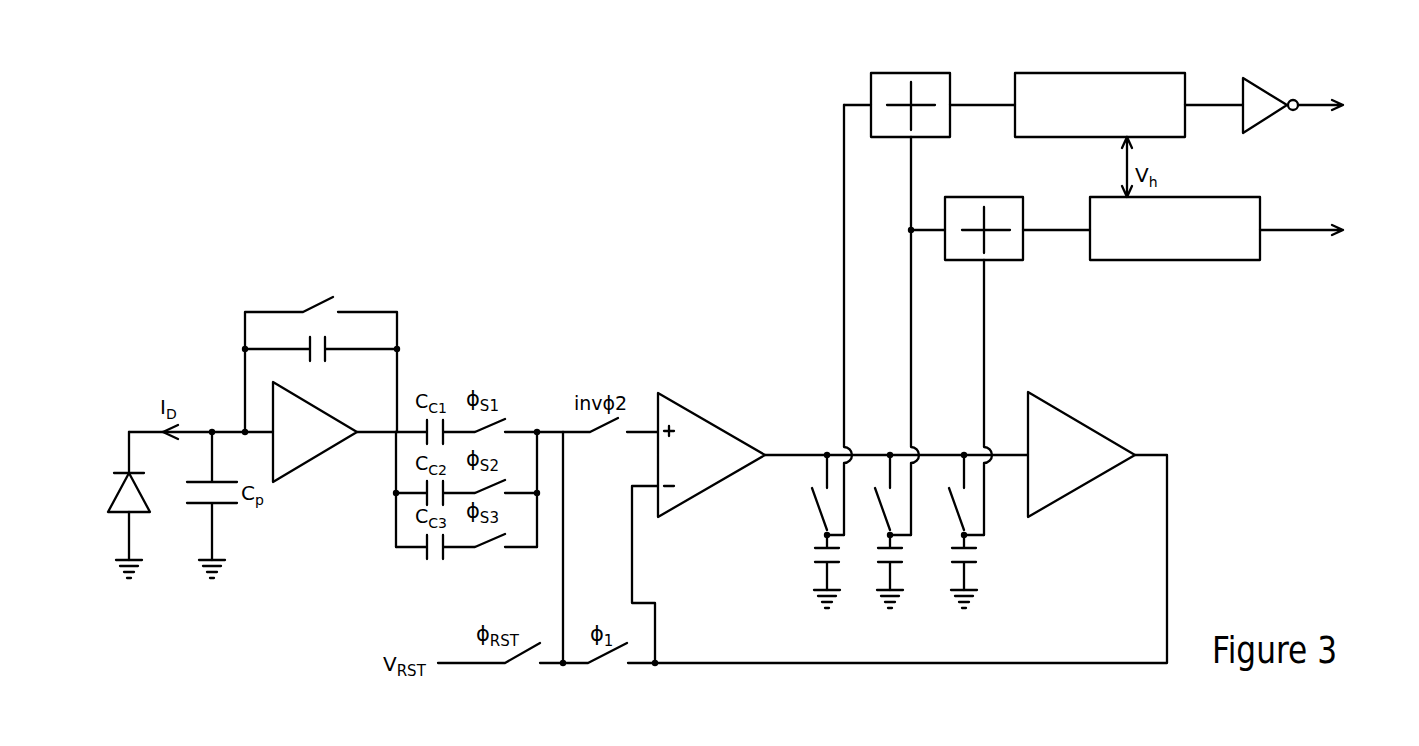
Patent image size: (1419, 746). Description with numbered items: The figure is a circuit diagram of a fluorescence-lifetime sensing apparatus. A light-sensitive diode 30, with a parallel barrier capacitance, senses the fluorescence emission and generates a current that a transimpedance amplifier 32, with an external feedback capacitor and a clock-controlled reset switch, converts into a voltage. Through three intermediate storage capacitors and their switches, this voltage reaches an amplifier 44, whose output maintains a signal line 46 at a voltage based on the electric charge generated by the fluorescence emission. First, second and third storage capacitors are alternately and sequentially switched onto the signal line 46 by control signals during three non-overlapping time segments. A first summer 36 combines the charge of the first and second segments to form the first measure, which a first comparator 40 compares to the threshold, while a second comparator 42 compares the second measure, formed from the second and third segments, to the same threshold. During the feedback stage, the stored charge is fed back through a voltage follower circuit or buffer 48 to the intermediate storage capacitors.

The light-sensitive diode 30 is at (122, 505).
The transimpedance amplifier 32 is at (328, 450).
The first summer 36 is at (911, 73).
The first comparator 40 is at (1105, 73).
The second comparator 42 is at (1232, 197).
The amplifier 44 is at (713, 423).
The signal line 46 is at (790, 452).
The voltage follower circuit or buffer 48 is at (1088, 423).